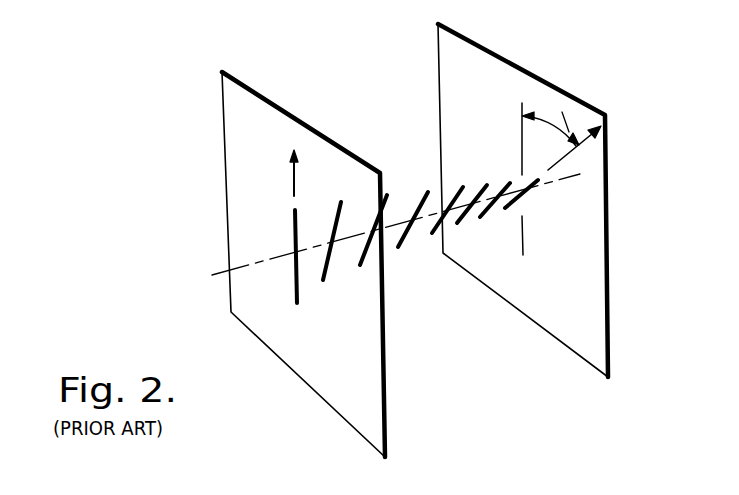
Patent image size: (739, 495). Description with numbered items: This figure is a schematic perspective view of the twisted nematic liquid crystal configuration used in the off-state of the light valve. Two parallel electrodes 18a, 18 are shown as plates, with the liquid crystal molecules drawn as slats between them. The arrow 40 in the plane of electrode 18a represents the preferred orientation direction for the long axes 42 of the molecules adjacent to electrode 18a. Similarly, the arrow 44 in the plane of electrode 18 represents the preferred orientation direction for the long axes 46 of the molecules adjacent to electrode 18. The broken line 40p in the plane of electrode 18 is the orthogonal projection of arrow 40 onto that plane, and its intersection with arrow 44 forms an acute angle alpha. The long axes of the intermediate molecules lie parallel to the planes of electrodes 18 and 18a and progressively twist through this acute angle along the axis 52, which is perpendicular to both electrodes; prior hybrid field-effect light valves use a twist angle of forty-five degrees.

The electrode 18 is at (575, 340).
The electrode 18a is at (343, 405).
The arrow 40 is at (296, 191).
The broken line 40p is at (519, 127).
The long axes of molecules 42 is at (296, 285).
The arrow 44 is at (588, 139).
The long axes of molecules 46 is at (511, 203).
The axis 52 is at (219, 270).